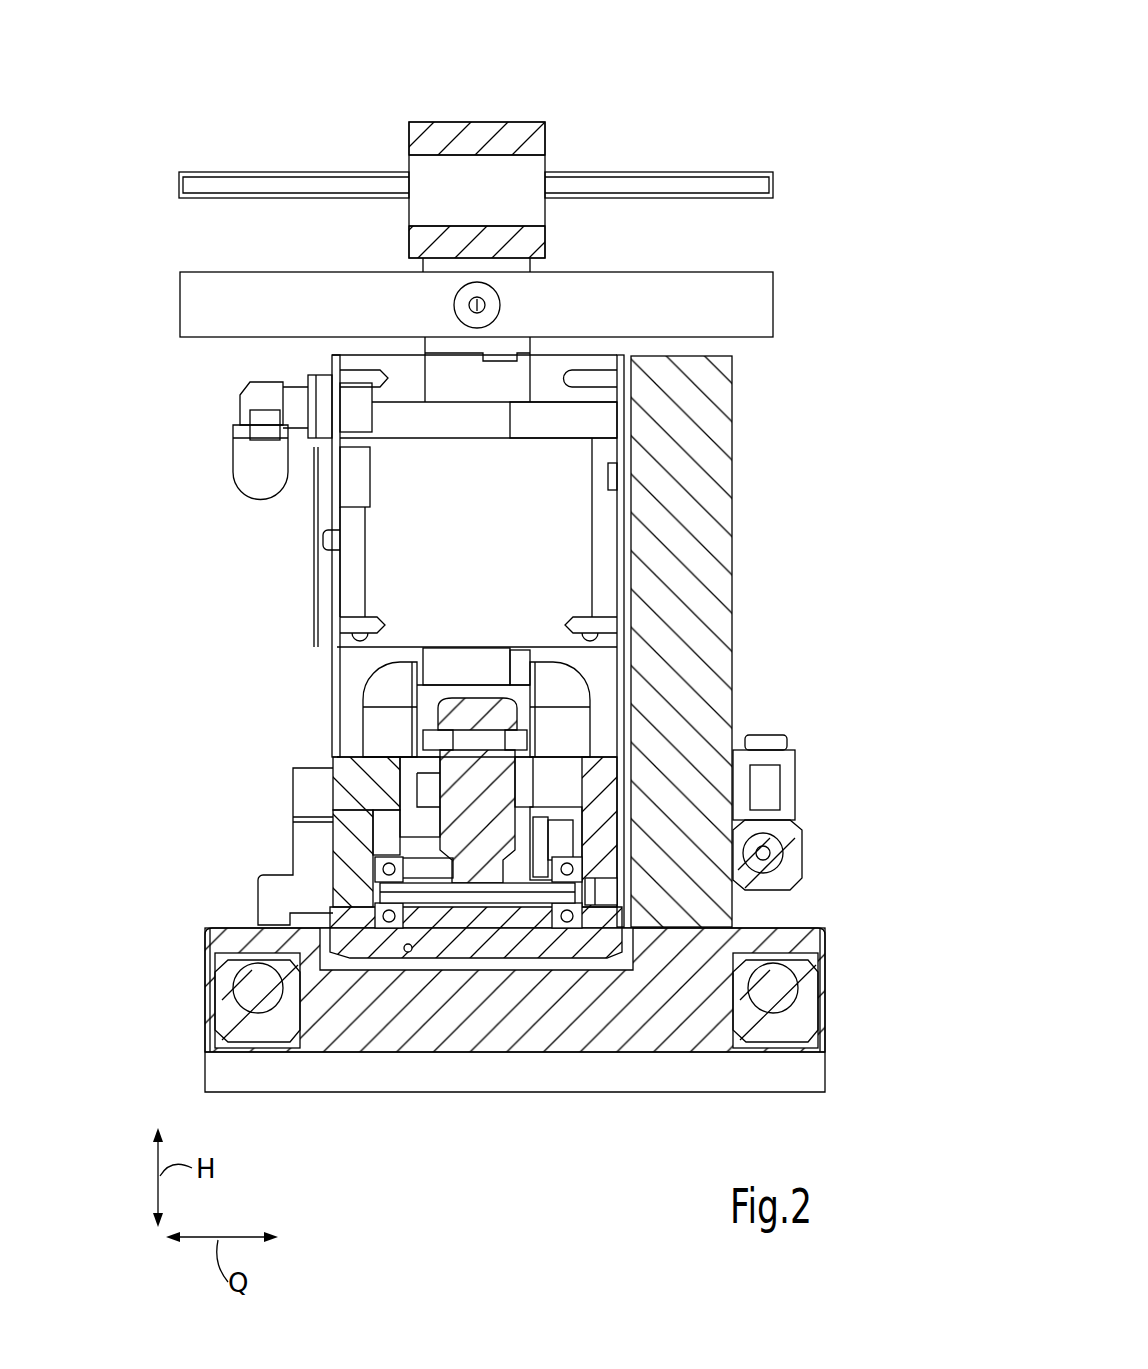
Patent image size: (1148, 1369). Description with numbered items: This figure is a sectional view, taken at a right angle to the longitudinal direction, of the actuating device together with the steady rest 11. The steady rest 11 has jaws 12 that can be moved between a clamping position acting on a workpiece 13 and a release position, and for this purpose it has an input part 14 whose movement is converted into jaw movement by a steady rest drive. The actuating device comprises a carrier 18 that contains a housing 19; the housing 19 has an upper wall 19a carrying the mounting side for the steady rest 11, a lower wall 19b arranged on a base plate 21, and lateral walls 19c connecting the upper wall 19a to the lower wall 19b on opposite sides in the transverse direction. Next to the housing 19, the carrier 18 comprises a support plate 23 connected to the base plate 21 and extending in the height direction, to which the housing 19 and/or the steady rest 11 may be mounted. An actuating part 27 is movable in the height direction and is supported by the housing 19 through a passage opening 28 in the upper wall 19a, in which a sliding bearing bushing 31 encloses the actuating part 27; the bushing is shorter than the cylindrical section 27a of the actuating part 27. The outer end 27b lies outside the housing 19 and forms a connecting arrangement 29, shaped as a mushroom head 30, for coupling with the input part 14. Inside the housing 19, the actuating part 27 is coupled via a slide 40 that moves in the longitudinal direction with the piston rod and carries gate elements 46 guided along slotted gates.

The steady rest 11 is at (196, 447).
The jaws 12 is at (582, 190).
The workpiece 13 is at (479, 122).
The input part 14 is at (455, 648).
The carrier 18 is at (770, 556).
The housing 19 is at (350, 885).
The upper wall 19a is at (338, 790).
The lower wall 19b is at (573, 950).
The lateral walls 19c is at (397, 832).
The base plate 21 is at (483, 1028).
The support plate 23 is at (700, 672).
The actuating part 27 is at (524, 700).
The cylindrical section 27a is at (492, 790).
The outer end 27b is at (492, 718).
The passage opening 28 is at (430, 790).
The connecting arrangement 29 is at (437, 707).
The mushroom head 30 is at (560, 709).
The sliding bearing bushing 31 is at (433, 802).
The slide 40 is at (443, 915).
The gate element 46 is at (420, 905).